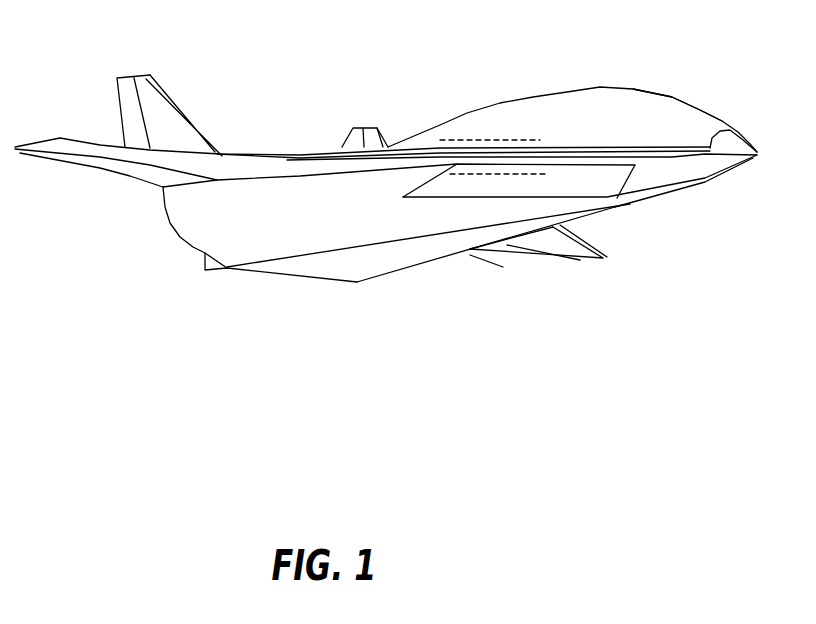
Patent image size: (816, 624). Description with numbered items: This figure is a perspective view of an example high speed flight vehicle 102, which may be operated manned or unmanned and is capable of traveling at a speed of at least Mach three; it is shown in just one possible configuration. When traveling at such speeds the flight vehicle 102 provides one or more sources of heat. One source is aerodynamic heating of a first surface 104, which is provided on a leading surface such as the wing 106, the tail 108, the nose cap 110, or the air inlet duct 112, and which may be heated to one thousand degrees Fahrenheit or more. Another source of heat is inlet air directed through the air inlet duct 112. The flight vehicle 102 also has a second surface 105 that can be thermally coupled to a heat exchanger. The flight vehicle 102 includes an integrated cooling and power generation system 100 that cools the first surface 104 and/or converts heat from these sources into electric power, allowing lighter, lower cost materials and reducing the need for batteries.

The integrated cooling and power generation system 100 is at (534, 139).
The high speed flight vehicle 102 is at (483, 104).
The first surface 104 is at (702, 112).
The second surface 105 is at (676, 177).
The wing 106 is at (547, 247).
The tail 108 is at (143, 100).
The nose cap 110 is at (758, 156).
The air inlet duct 112 is at (603, 183).